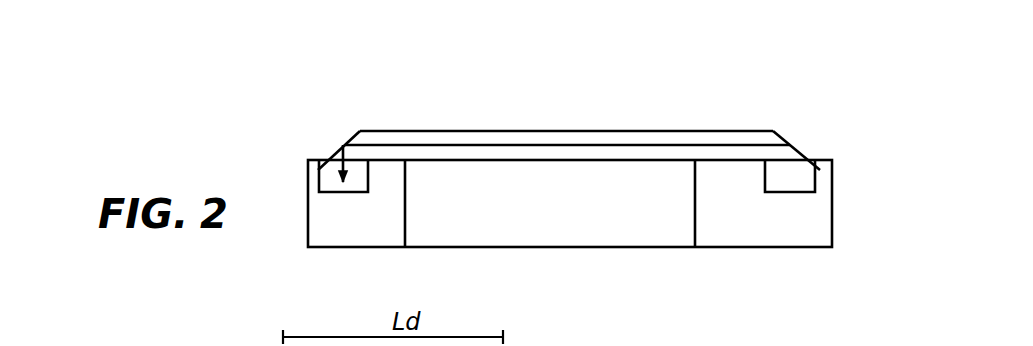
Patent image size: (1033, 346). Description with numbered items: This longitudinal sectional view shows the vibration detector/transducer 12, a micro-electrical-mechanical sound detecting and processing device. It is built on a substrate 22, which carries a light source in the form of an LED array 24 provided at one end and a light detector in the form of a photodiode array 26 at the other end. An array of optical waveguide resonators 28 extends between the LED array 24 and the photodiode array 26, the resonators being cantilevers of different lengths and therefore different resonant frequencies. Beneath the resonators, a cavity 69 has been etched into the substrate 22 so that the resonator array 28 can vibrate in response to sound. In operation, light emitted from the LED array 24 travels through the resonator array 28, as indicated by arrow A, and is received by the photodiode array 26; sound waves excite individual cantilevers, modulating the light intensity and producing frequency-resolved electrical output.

The vibration detector/transducer 12 is at (500, 127).
The substrate 22 is at (722, 252).
The LED array 24 is at (318, 170).
The photodiode array 26 is at (791, 182).
The optical waveguide resonator array 28 is at (592, 126).
The cavity 69 is at (558, 230).
The arrow A is at (417, 144).